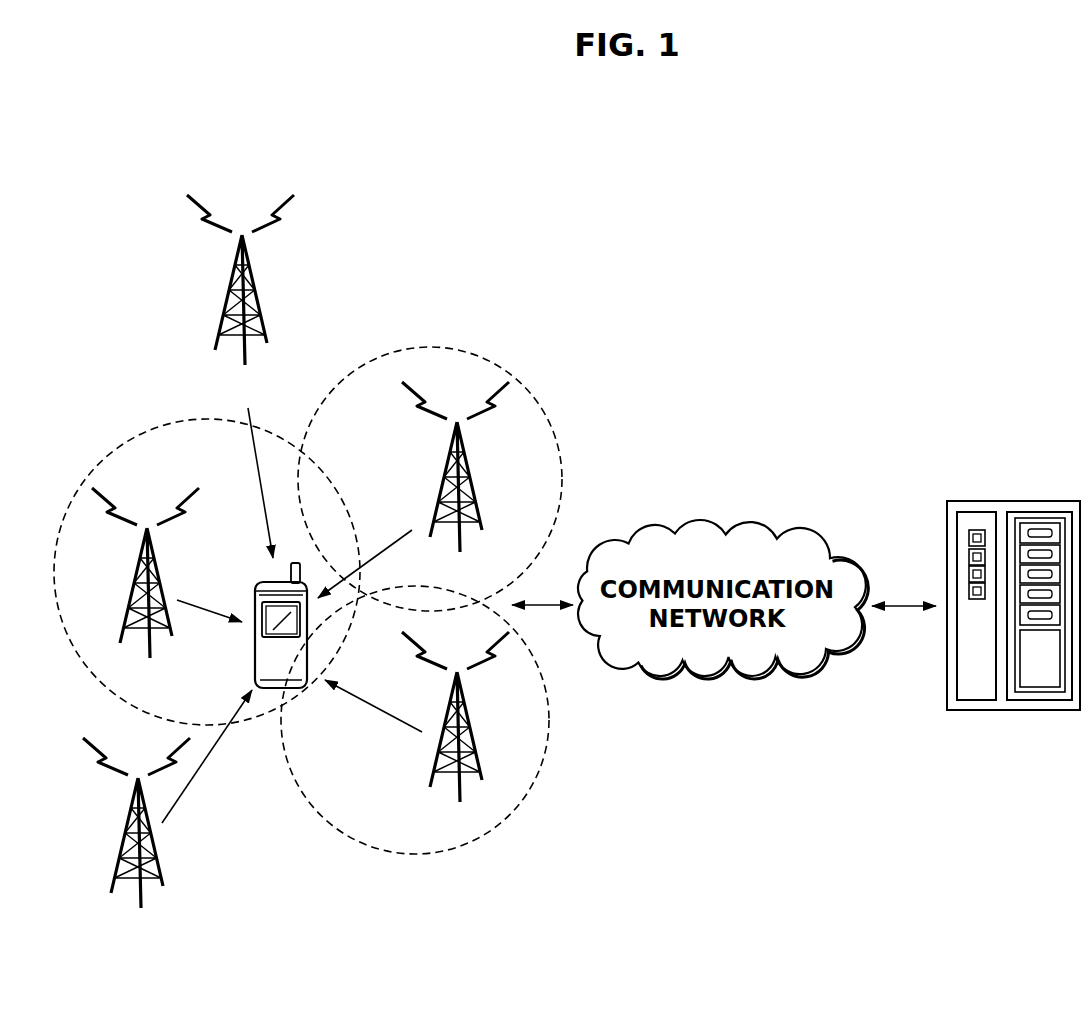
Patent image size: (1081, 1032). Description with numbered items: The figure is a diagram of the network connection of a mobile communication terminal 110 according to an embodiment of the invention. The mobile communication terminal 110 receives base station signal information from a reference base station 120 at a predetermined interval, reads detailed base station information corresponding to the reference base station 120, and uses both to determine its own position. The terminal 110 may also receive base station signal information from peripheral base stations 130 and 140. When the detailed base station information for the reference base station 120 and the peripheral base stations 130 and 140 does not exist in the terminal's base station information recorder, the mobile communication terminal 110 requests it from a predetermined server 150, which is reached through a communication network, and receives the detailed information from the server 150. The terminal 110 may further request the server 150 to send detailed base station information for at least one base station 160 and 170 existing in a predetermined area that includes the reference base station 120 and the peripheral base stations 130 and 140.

The mobile communication terminal 110 is at (281, 644).
The reference base station 120 is at (145, 589).
The peripheral base station 130 is at (455, 481).
The peripheral base station 140 is at (455, 732).
The server 150 is at (1013, 623).
The base station existing in a predetermined area 160 is at (240, 298).
The base station existing in a predetermined area 170 is at (136, 840).